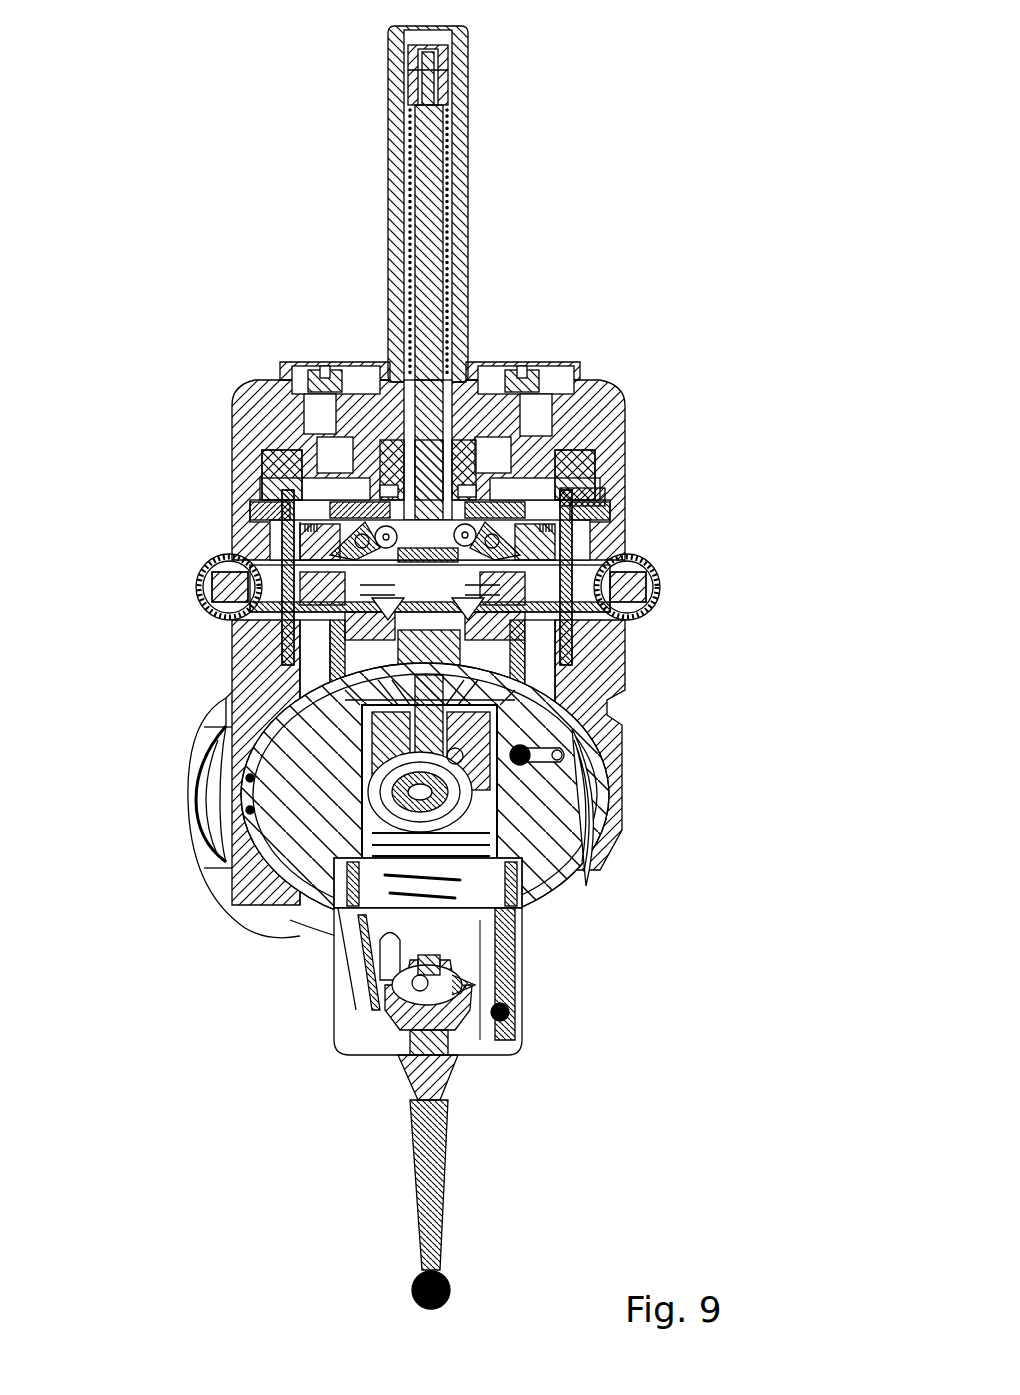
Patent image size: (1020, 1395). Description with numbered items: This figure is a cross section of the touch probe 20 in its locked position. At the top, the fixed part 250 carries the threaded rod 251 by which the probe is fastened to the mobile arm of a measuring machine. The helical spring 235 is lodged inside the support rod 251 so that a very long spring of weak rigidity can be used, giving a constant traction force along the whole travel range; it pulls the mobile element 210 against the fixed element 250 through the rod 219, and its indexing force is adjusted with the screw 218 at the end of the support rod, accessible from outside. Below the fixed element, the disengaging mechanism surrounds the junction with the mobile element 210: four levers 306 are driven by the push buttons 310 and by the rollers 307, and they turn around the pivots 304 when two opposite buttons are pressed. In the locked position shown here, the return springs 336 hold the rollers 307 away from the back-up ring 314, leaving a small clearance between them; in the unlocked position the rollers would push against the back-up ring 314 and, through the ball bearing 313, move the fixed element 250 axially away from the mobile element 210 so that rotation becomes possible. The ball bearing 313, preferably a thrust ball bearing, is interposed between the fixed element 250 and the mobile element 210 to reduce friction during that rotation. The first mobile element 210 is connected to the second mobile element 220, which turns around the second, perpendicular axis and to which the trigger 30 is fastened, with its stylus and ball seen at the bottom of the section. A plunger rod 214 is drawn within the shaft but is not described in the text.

The touch probe 20 is at (655, 237).
The trigger 30 is at (508, 1014).
The mobile element 210 is at (600, 676).
The plunger rod 214 is at (470, 182).
The screw 218 is at (415, 75).
The rod 219 is at (430, 455).
The second mobile element 220 is at (543, 870).
The helical spring 235 is at (410, 215).
The fixed part 250 is at (620, 400).
The threaded rod 251 is at (470, 128).
The pivots 304 is at (608, 534).
The levers 306 is at (222, 548).
The rollers 307 is at (305, 492).
The push buttons 310 is at (200, 592).
The ball bearing 313 is at (592, 462).
The back-up ring 314 is at (608, 480).
The return springs 336 is at (282, 517).